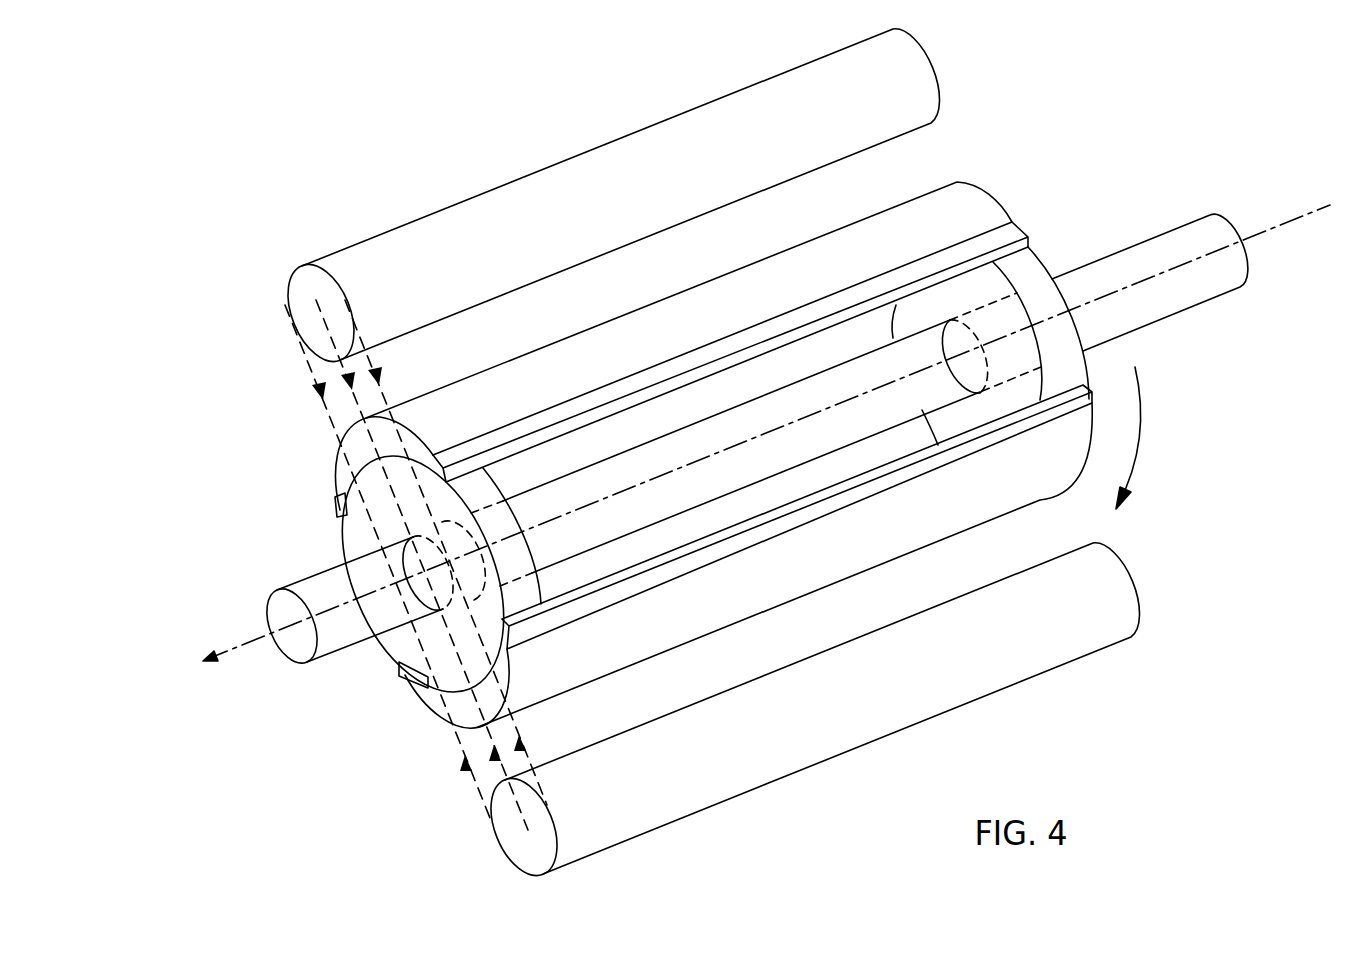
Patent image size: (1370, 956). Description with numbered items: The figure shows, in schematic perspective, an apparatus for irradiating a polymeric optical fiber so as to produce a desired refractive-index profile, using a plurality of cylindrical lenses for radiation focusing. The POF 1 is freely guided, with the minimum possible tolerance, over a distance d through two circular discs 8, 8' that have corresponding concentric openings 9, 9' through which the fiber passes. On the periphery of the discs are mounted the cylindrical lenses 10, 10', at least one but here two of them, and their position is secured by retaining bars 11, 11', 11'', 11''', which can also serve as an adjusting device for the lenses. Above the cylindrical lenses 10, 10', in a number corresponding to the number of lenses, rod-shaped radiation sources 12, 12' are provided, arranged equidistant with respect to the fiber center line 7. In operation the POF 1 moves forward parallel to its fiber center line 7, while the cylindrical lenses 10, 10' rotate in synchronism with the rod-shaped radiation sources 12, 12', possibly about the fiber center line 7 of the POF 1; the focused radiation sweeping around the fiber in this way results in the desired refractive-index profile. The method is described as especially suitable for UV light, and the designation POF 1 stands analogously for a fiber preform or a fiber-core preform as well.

The POF 1 is at (275, 620).
The fiber center line 7 is at (1215, 255).
The circular disc 8 is at (527, 520).
The circular disc 8' is at (1008, 323).
The concentric opening 9 is at (423, 573).
The concentric opening 9' is at (1067, 356).
The cylindrical lens 10 is at (673, 346).
The cylindrical lens 10' is at (748, 565).
The retaining bar 11 is at (293, 492).
The retaining bar 11' is at (378, 717).
The retaining bar 11'' is at (760, 312).
The retaining bar 11''' is at (797, 517).
The rod-shaped radiation source 12 is at (607, 200).
The rod-shaped radiation source 12' is at (809, 714).
The distance d is at (697, 430).